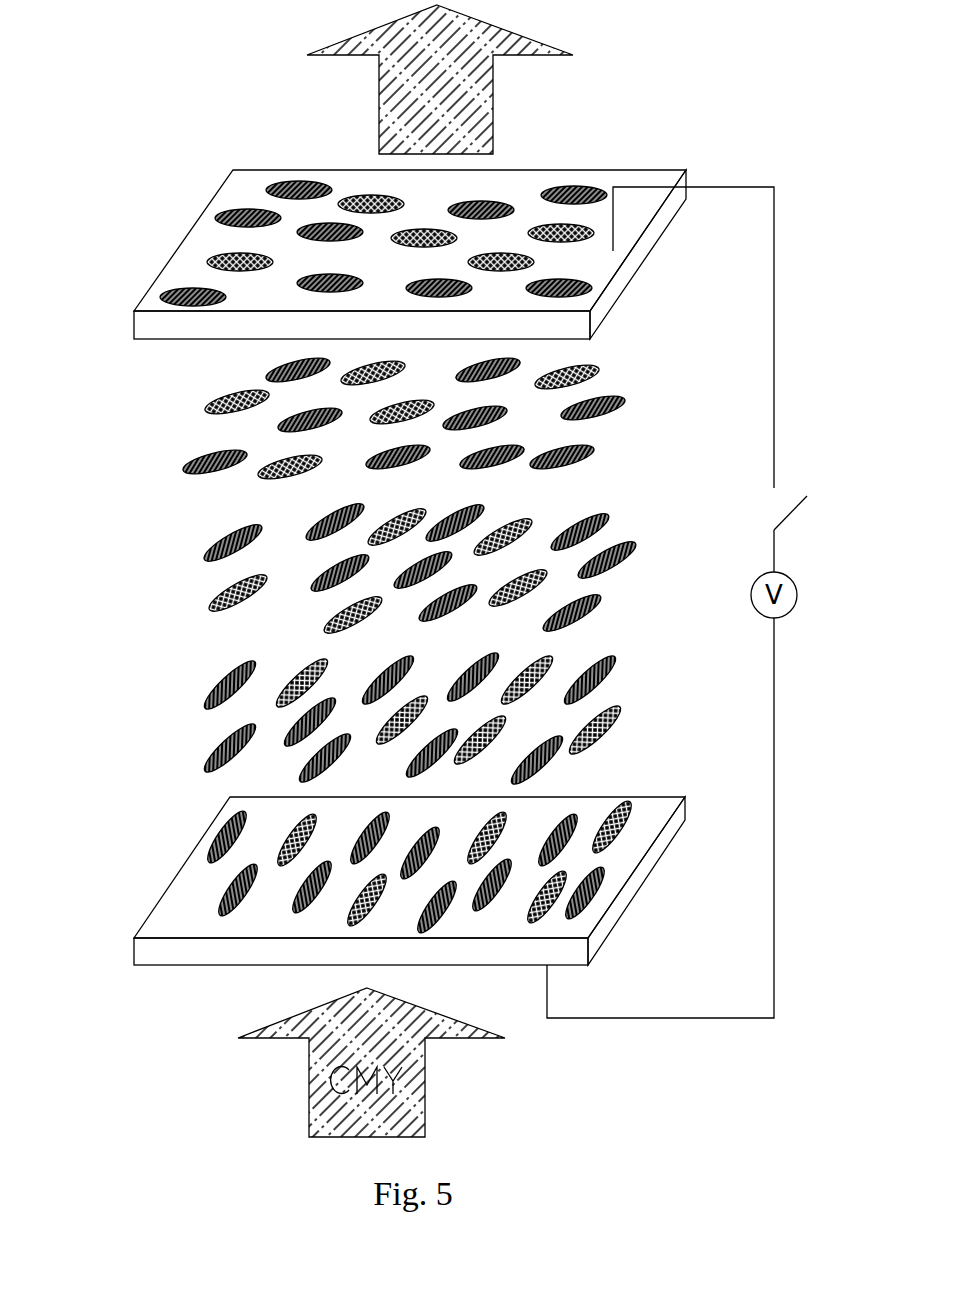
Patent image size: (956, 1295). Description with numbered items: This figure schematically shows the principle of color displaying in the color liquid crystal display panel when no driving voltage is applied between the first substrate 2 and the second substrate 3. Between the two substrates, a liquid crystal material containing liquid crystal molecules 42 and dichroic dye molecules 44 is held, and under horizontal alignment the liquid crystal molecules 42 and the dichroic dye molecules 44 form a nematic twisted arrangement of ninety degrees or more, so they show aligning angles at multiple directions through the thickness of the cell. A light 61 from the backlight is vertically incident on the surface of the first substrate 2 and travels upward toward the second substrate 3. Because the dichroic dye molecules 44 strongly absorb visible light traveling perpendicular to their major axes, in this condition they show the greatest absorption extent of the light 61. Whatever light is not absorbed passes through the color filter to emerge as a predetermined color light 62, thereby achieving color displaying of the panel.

The predetermined color light 62 is at (412, 129).
The second substrate 3 is at (187, 273).
The liquid crystal molecules 42 is at (183, 467).
The dichroic dye molecules 44 is at (207, 605).
The first substrate 2 is at (183, 922).
The light 61 is at (318, 1113).